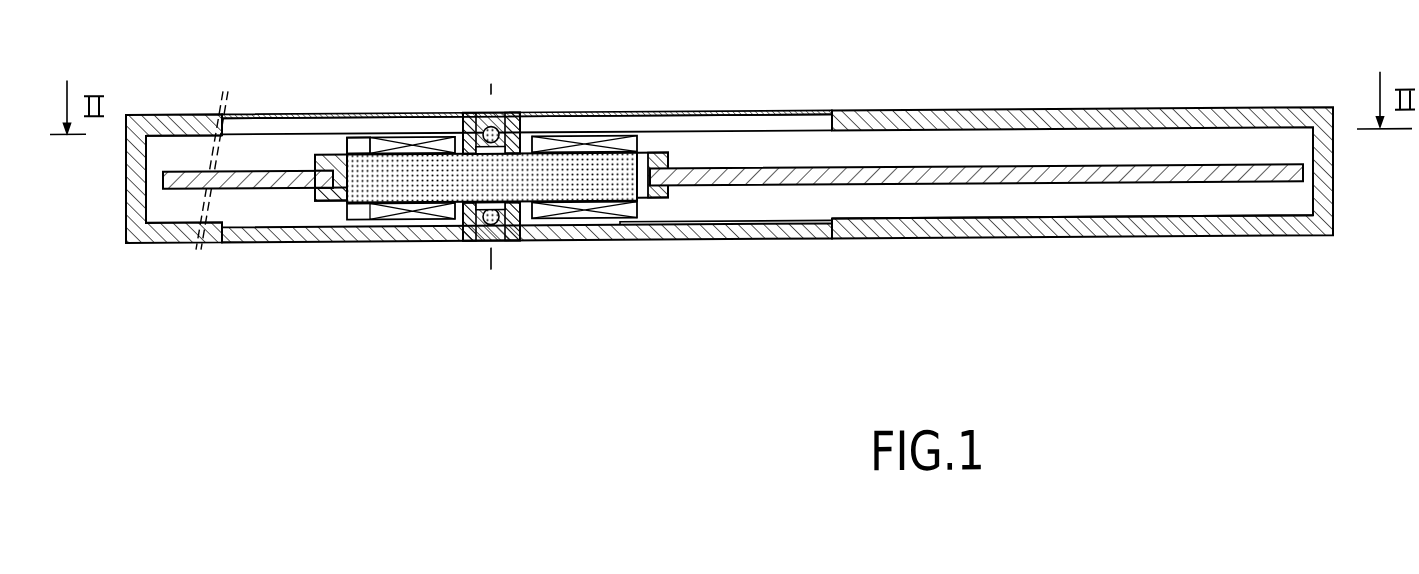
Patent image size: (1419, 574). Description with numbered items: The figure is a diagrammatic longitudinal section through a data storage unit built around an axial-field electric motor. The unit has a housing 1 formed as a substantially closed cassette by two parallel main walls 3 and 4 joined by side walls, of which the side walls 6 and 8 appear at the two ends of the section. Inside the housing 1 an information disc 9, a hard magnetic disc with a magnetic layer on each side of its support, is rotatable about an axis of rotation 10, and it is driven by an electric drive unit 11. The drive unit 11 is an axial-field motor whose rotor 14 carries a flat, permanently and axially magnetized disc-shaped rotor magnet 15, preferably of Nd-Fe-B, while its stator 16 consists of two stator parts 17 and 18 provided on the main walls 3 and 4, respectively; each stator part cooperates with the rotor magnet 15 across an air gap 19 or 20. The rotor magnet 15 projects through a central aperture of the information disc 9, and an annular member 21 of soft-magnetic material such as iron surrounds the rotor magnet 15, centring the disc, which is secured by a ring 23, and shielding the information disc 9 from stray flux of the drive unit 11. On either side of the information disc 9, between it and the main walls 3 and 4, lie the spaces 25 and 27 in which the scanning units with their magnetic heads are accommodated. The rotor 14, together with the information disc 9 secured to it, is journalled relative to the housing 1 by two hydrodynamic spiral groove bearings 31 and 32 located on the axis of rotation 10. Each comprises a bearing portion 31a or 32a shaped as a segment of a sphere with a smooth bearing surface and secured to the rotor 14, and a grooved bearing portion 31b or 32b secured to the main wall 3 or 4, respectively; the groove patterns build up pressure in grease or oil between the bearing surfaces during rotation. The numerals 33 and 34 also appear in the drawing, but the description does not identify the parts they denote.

The housing 1 is at (127, 256).
The main wall 3 is at (1080, 121).
The main wall 4 is at (1013, 234).
The side wall 6 is at (1322, 160).
The side wall 8 is at (137, 160).
The information disc 9 is at (985, 174).
The axis of rotation 10 is at (495, 86).
The electric drive unit 11 is at (661, 180).
The rotor 14 is at (372, 145).
The rotor magnet 15 is at (590, 168).
The stator 16 is at (654, 222).
The stator part 17 is at (548, 147).
The stator part 18 is at (553, 213).
The air gap 19 is at (388, 152).
The air gap 20 is at (361, 218).
The annular member 21 is at (330, 195).
The ring 23 is at (308, 181).
The space 25 is at (245, 148).
The space 27 is at (233, 209).
The hydrodynamic spiral groove bearing 31 is at (479, 96).
The bearing portion 31a is at (507, 120).
The bearing portion 31b is at (463, 133).
The hydrodynamic spiral groove bearing 32 is at (454, 260).
The bearing portion 32a is at (420, 231).
The bearing portion 32b is at (474, 242).
The sleeve 33 is at (720, 130).
The lower liner 34 is at (611, 227).